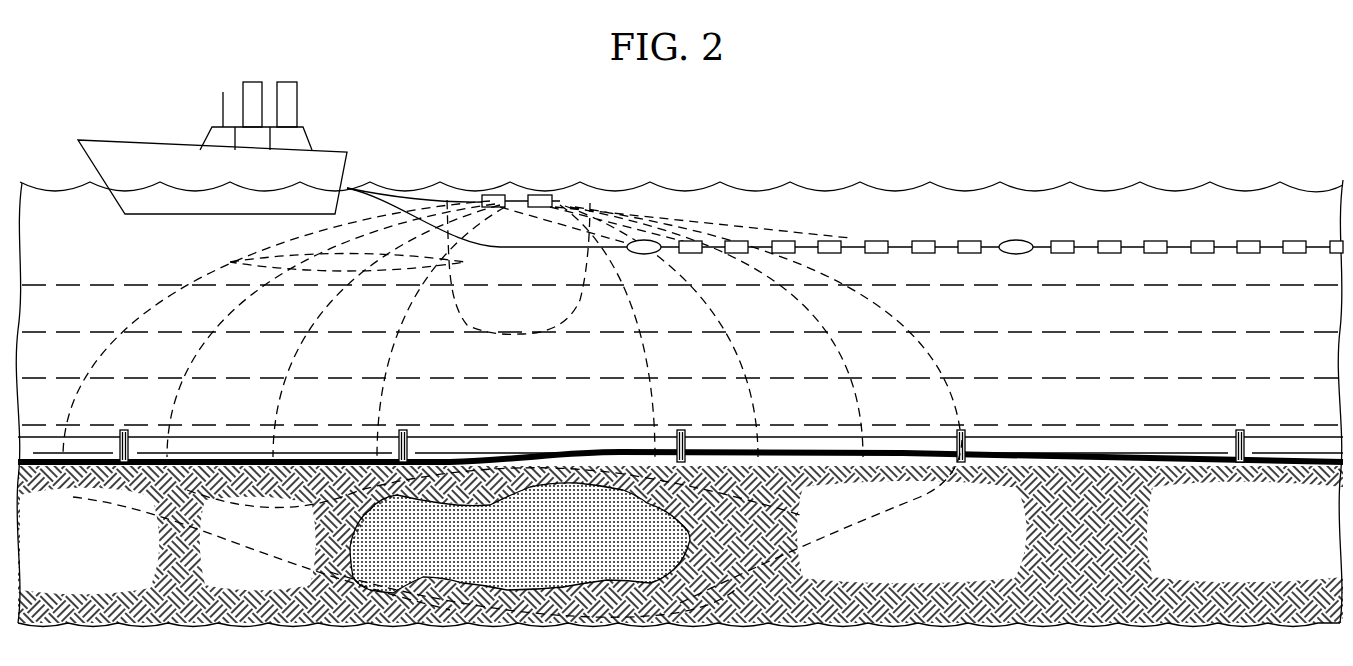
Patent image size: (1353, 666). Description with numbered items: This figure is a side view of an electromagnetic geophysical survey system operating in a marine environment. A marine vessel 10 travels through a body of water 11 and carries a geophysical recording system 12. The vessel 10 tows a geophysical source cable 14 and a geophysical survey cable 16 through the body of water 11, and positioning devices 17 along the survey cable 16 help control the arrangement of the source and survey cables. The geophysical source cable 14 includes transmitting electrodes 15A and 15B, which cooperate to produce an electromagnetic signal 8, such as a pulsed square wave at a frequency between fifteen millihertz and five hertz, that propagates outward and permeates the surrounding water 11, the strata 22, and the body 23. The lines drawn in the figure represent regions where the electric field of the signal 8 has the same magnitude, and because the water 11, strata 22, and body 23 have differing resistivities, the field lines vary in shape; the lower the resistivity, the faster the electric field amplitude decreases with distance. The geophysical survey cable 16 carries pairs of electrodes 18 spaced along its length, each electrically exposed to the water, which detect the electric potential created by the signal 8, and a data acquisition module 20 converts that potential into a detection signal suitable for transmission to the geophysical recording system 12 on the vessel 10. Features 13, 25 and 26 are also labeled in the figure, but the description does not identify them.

The electromagnetic signal 8 is at (232, 262).
The marine vessel 10 is at (122, 143).
The body of water 11 is at (1110, 364).
The geophysical recording system 12 is at (312, 140).
The seabed 13 is at (1010, 458).
The geophysical source cable 14 is at (423, 197).
The transmitting electrode 15A is at (497, 195).
The transmitting electrode 15B is at (537, 195).
The geophysical survey cable 16 is at (538, 249).
The positioning device 17 is at (648, 254).
The electrode 18 is at (693, 255).
The data acquisition module 20 is at (737, 242).
The strata 22 is at (1057, 549).
The body 23 is at (503, 557).
The sediment layer 25 is at (1152, 452).
The ocean bottom node 26 is at (1287, 437).